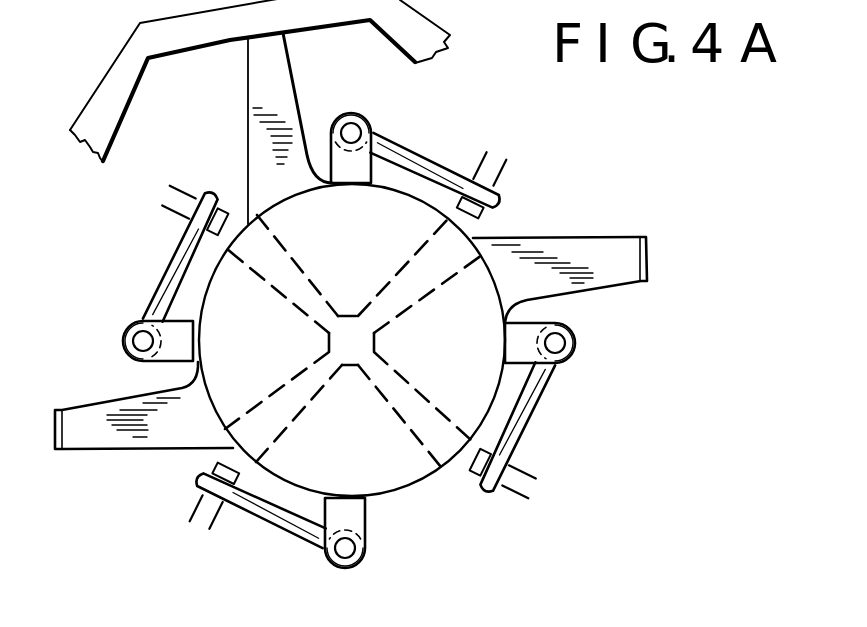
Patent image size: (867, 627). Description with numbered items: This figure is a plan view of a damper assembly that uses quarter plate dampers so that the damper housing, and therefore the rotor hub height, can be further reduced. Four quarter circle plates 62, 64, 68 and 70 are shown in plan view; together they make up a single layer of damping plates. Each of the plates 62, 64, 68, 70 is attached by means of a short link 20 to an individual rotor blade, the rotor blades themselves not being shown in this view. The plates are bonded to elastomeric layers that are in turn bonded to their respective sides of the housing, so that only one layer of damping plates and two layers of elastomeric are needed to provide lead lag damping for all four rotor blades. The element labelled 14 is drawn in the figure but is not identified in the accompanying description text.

The housing wall 14 is at (110, 92).
The short link 20 is at (433, 162).
The plate 62 is at (472, 298).
The plate 64 is at (388, 458).
The plate 68 is at (223, 370).
The plate 70 is at (277, 210).